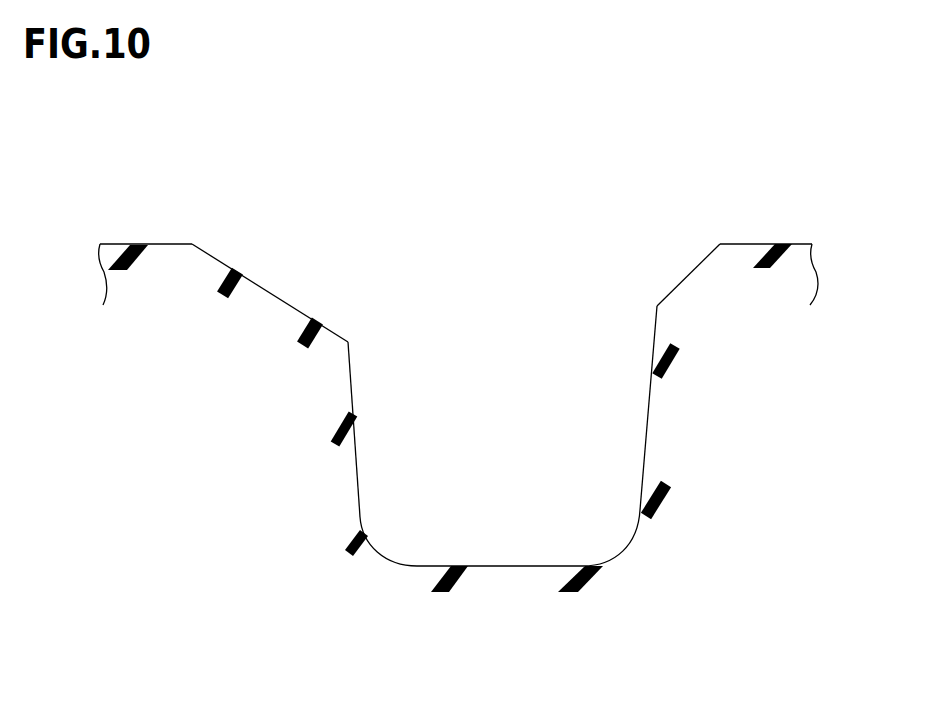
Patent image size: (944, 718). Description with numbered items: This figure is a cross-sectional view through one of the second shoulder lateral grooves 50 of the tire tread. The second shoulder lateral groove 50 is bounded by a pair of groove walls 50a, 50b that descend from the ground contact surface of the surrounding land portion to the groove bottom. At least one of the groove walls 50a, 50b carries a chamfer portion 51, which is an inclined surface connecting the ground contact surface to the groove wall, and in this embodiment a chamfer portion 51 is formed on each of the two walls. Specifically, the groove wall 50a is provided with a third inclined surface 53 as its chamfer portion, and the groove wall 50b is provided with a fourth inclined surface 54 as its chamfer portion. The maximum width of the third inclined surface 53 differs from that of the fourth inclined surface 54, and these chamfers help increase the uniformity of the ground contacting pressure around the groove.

The second shoulder lateral groove 50 is at (456, 452).
The groove wall 50a is at (357, 449).
The groove wall 50b is at (645, 478).
The chamfer portion 51 is at (567, 188).
The third inclined surface 53 is at (295, 308).
The fourth inclined surface 54 is at (688, 273).